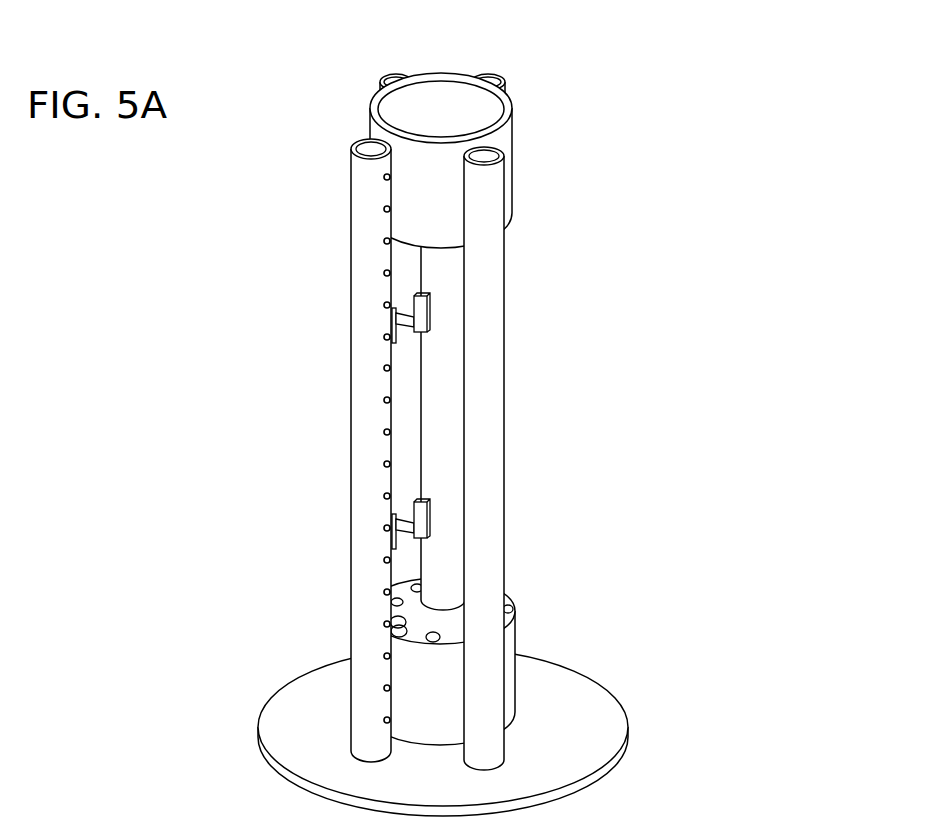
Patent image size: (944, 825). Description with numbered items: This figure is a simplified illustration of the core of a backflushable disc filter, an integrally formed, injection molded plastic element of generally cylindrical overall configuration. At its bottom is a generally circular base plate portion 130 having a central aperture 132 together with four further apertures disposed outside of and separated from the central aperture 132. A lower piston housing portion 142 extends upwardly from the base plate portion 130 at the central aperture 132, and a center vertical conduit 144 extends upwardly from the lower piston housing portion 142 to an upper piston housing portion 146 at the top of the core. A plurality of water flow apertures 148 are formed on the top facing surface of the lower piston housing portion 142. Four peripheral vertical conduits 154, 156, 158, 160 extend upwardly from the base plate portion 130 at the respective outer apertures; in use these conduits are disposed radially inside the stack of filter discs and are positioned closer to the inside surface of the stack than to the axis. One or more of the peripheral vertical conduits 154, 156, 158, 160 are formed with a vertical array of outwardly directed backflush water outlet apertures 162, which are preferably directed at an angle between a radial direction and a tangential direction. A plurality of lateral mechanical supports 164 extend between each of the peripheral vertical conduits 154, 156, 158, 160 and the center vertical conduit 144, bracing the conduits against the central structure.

The base plate portion 130 is at (598, 737).
The central aperture 132 is at (433, 98).
The lower piston housing portion 142 is at (451, 661).
The center vertical conduit 144 is at (447, 455).
The upper piston housing portion 146 is at (412, 137).
The water flow apertures 148 is at (440, 648).
The peripheral vertical conduit 154 is at (506, 92).
The peripheral vertical conduit 156 is at (380, 84).
The peripheral vertical conduit 158 is at (318, 450).
The peripheral vertical conduit 160 is at (493, 557).
The backflush water outlet apertures 162 is at (384, 433).
The lateral mechanical supports 164 is at (410, 312).